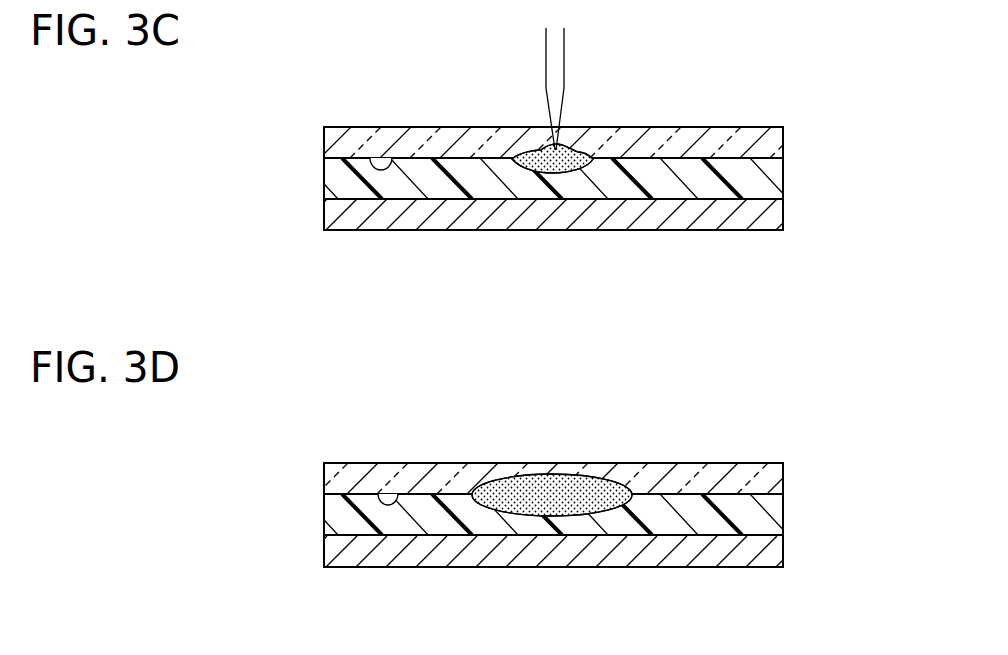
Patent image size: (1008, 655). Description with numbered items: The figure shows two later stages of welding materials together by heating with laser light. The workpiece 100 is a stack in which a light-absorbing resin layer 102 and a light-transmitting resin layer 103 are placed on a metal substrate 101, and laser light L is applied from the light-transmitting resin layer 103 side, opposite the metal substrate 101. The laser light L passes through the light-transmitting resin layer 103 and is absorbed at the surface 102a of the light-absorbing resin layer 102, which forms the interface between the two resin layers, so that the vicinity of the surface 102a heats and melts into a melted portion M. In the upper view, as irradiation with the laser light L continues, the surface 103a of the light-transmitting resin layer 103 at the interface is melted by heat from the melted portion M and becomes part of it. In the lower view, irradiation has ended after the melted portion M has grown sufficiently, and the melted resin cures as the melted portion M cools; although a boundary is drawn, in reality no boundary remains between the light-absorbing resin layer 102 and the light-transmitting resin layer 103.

In FIG. 3C, the workpiece 100 is at (343, 115).
In FIG. 3D, the workpiece 100 is at (344, 452).
In FIG. 3C, the metal substrate 101 is at (775, 222).
In FIG. 3D, the metal substrate 101 is at (775, 558).
In FIG. 3C, the light-absorbing resin layer 102 is at (775, 178).
In FIG. 3D, the light-absorbing resin layer 102 is at (775, 514).
In FIG. 3C, the surface of the light-absorbing resin layer 102a is at (338, 158).
In FIG. 3D, the surface of the light-absorbing resin layer 102a is at (338, 494).
In FIG. 3C, the light-transmitting resin layer 103 is at (778, 142).
In FIG. 3D, the light-transmitting resin layer 103 is at (778, 478).
In FIG. 3C, the surface of the light-transmitting resin layer 103a is at (388, 158).
In FIG. 3D, the surface of the light-transmitting resin layer 103a is at (399, 494).
In FIG. 3C, the laser light L is at (528, 62).
In FIG. 3C, the melted portion M is at (577, 143).
In FIG. 3D, the melted portion M is at (572, 490).